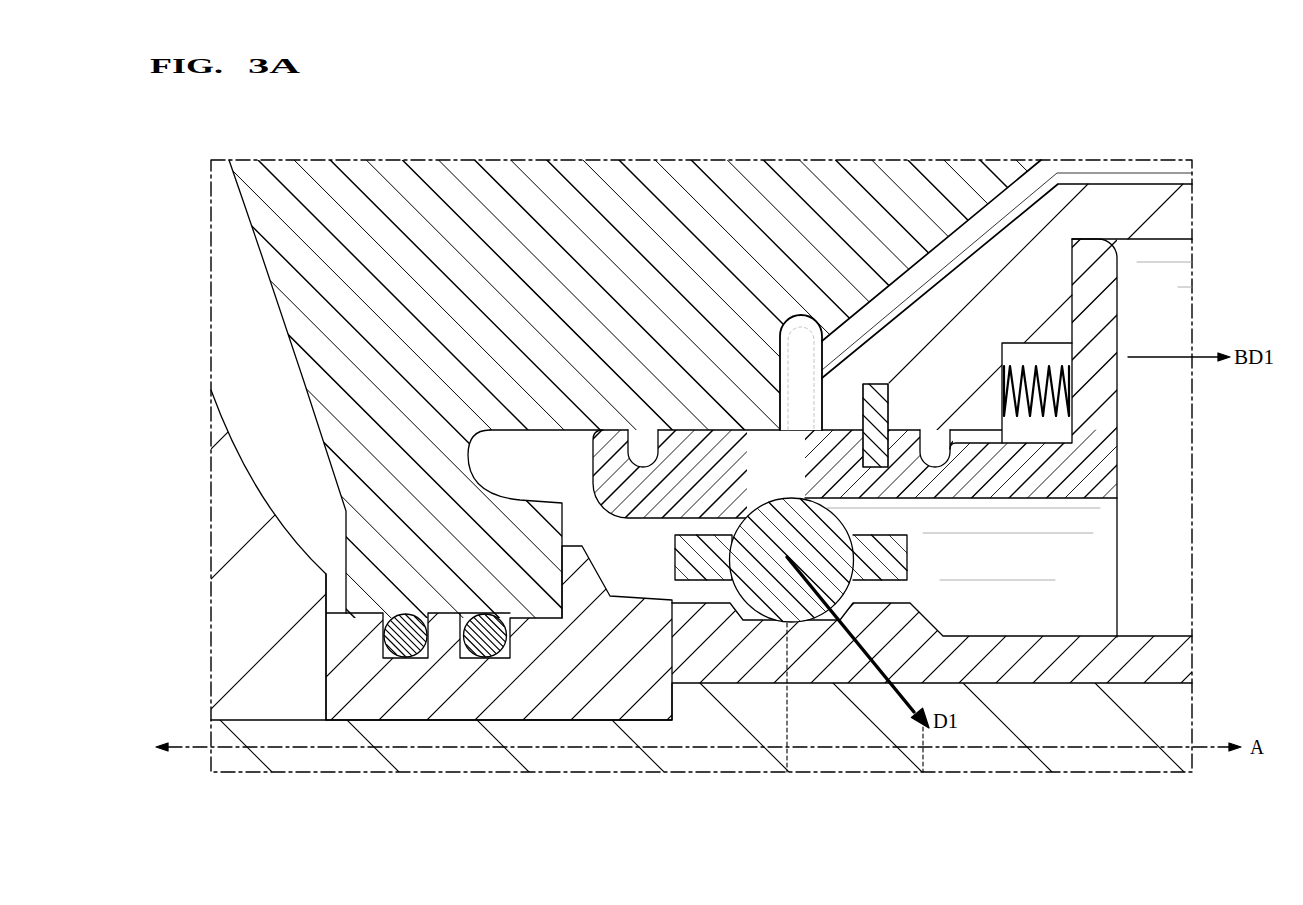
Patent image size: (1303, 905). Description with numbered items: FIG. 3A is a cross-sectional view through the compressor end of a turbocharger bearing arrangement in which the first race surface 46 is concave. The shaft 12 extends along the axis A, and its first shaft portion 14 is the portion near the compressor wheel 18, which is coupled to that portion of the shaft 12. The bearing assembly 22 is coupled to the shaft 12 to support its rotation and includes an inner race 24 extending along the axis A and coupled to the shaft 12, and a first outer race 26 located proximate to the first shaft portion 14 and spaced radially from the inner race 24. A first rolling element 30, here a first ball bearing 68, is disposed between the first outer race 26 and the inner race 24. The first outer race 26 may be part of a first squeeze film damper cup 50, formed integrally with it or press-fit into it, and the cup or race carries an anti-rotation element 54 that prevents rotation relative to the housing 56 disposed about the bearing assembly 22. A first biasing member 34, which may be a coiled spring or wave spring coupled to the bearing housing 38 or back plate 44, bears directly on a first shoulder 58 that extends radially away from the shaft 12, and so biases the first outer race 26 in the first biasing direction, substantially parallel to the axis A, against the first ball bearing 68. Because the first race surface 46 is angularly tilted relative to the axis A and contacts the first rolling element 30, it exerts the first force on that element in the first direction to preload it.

The shaft 12 is at (892, 723).
The first shaft portion 14 is at (430, 737).
The compressor wheel 18 is at (267, 600).
The bearing assembly 22 is at (615, 405).
The inner race 24 is at (1078, 655).
The first outer race 26 is at (855, 334).
The first rolling element 30 is at (677, 675).
The first biasing member 34 is at (1043, 367).
The bearing housing 38 is at (983, 320).
The back plate 44 is at (855, 205).
The first race surface 46 is at (757, 503).
The first squeeze film damper cup 50 is at (780, 450).
The anti-rotation element 54 is at (878, 425).
The housing 56 is at (670, 195).
The first shoulder 58 is at (1098, 316).
The first ball bearing 68 is at (760, 573).